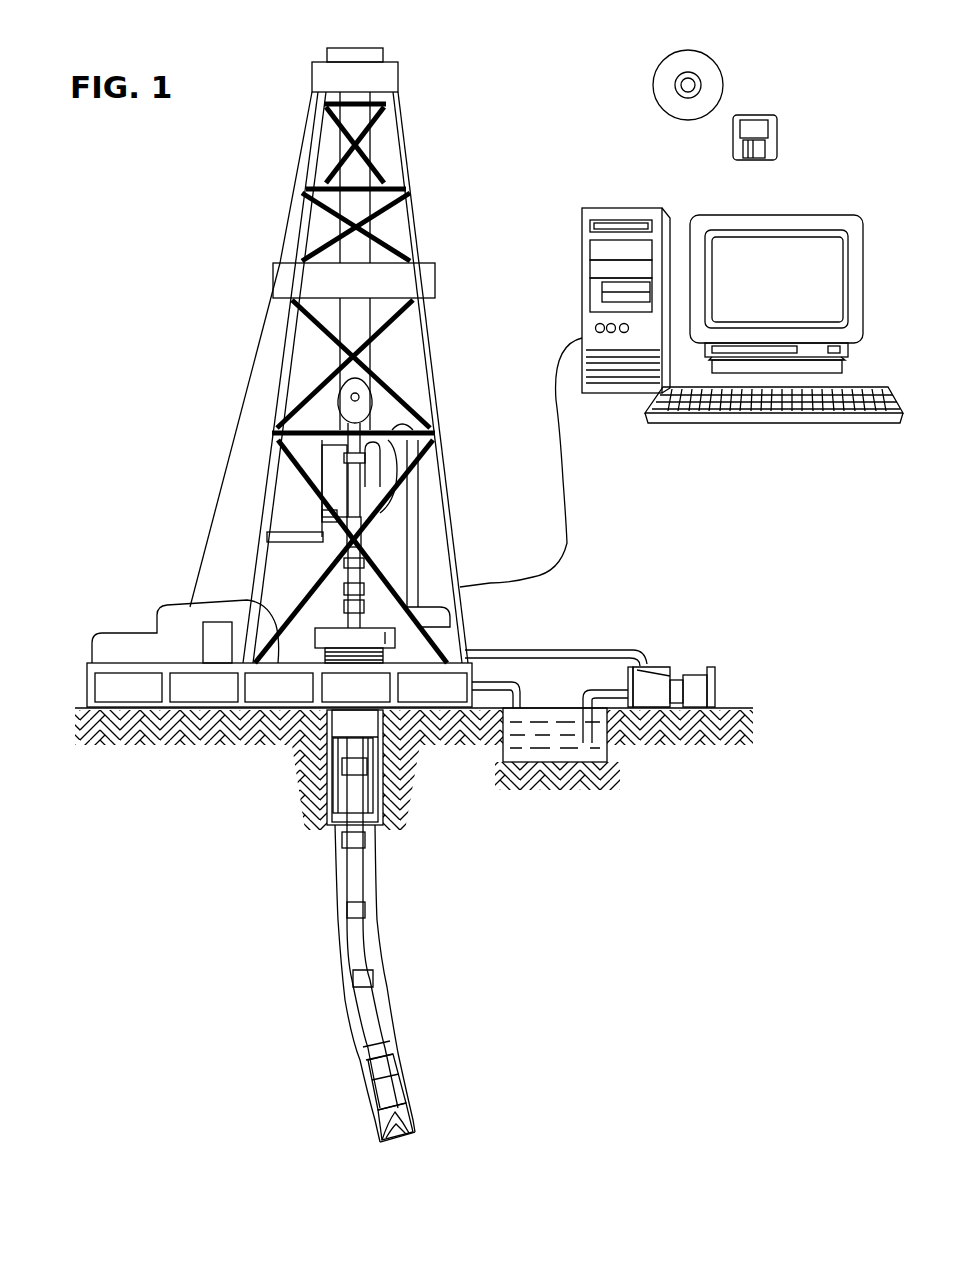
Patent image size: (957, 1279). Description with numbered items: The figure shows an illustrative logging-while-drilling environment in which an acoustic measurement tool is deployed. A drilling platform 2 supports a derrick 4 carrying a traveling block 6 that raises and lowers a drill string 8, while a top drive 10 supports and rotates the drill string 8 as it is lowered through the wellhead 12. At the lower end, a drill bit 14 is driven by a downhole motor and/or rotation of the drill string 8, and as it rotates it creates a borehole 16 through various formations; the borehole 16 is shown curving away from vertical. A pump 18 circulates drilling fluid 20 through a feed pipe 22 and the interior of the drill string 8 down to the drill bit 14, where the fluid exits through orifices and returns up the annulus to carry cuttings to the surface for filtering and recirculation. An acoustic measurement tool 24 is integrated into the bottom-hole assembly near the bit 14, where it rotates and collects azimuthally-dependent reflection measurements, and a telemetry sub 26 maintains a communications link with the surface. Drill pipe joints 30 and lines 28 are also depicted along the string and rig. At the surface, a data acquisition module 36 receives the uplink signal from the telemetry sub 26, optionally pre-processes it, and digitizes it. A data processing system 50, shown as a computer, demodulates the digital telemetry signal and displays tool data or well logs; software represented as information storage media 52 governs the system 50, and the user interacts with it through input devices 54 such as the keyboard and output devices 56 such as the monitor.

The drilling platform 2 is at (83, 682).
The derrick 4 is at (415, 223).
The traveling block 6 is at (363, 397).
The drill string 8 is at (363, 883).
The top drive 10 is at (357, 483).
The wellhead 12 is at (370, 627).
The drill bit 14 is at (373, 1115).
The borehole 16 is at (378, 938).
The pump 18 is at (647, 687).
The drilling fluid 20 is at (547, 730).
The feed pipe 22 is at (515, 650).
The acoustic measurement tool 24 is at (398, 1083).
The telemetry sub 26 is at (360, 1062).
The hose 28 is at (343, 590).
The drill pipe joint 30 is at (347, 908).
The data acquisition module 36 is at (212, 620).
The data processing system 50 is at (613, 207).
The information storage media 52 is at (715, 65).
The input devices 54 is at (793, 424).
The output devices 56 is at (808, 215).